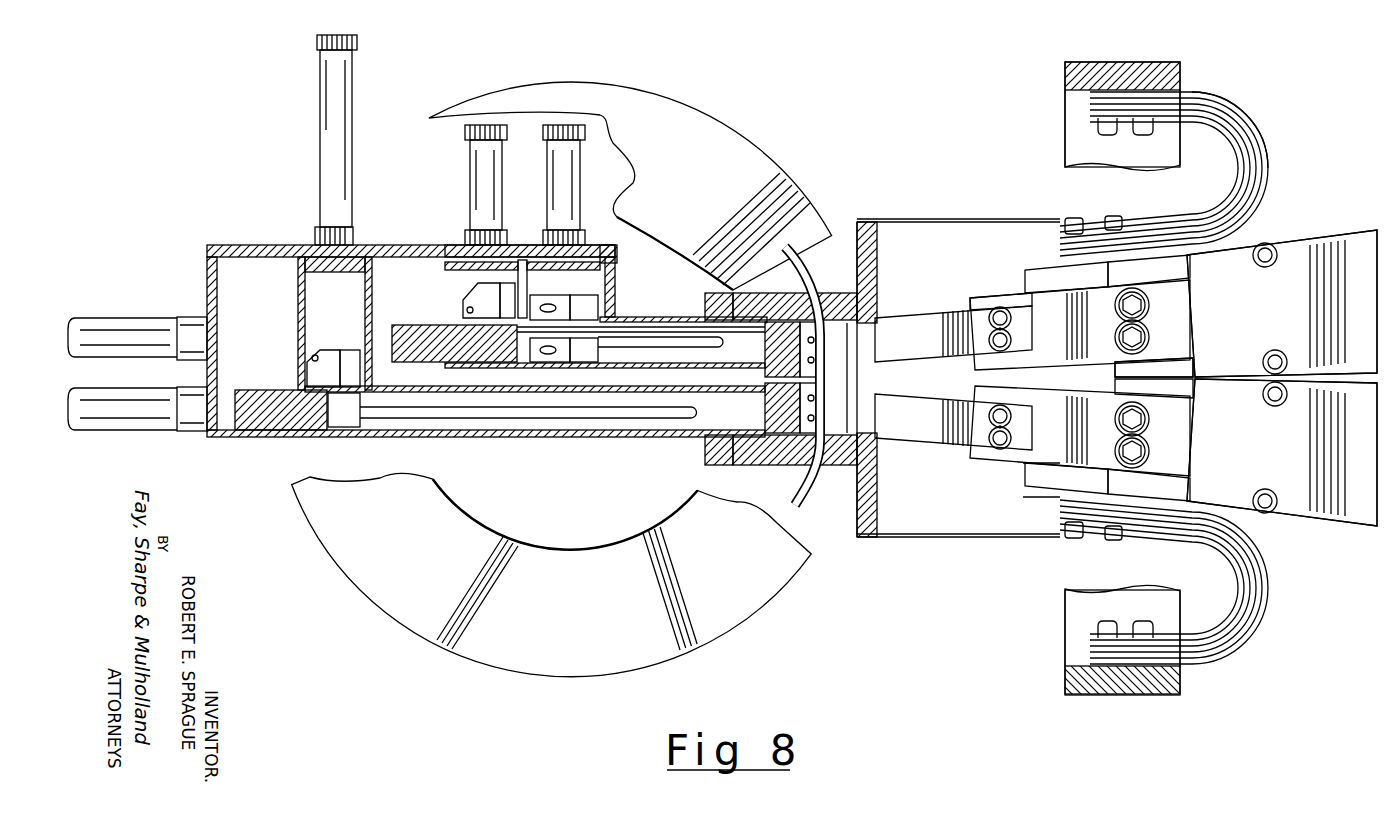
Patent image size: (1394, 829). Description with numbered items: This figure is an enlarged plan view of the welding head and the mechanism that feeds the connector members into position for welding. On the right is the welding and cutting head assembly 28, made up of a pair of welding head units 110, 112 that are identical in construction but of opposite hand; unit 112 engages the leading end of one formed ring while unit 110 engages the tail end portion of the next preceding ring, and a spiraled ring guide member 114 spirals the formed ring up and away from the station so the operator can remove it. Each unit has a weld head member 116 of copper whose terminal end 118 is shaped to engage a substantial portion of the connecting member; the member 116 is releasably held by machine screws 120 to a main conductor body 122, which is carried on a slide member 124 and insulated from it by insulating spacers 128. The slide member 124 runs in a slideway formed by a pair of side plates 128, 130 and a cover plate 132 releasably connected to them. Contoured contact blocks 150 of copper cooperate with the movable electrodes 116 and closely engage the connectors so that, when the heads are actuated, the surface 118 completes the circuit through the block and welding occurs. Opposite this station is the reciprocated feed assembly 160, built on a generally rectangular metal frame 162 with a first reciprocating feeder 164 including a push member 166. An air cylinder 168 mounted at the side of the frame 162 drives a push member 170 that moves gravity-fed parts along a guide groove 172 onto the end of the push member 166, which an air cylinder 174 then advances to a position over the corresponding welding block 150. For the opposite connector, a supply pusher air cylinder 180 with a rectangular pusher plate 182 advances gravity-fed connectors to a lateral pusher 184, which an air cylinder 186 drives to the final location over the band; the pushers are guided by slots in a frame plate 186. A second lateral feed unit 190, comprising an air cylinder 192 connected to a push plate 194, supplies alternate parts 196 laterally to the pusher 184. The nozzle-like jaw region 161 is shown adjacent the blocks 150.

The welding and cutting head assembly 28 is at (798, 497).
The welding head unit 110 is at (1292, 196).
The welding head unit 112 is at (1286, 590).
The spiraled ring guide member 114 is at (712, 116).
The weld head member 116 is at (905, 297).
The terminal end 118 is at (876, 360).
The machine screws 120 is at (1012, 320).
The main conductor body 122 is at (1025, 490).
The slide member 124 is at (1185, 378).
The insulating spacers / side plate 128 is at (1265, 240).
The side plate 130 is at (1275, 398).
The cover plate 132 is at (1287, 305).
The contact blocks 150 is at (798, 293).
The reciprocated feed assembly 160 is at (230, 188).
The nozzle jaw 161 is at (757, 387).
The rectangular metal frame 162 is at (278, 437).
The first reciprocating feeder 164 is at (302, 470).
The push member / feed unit 166 is at (382, 210).
The air cylinder 168 is at (353, 145).
The push member 170 is at (355, 285).
The guide groove 172 is at (380, 300).
The air cylinder 174 is at (93, 362).
The supply pusher air cylinder 180 is at (466, 180).
The rectangular pusher plate 182 is at (445, 276).
The lateral pusher 184 is at (392, 362).
The air cylinder 186 is at (92, 431).
The second lateral feed unit 190 is at (626, 239).
The air cylinder 192 is at (588, 178).
The push plate 194 is at (617, 272).
The parts 196 is at (617, 300).